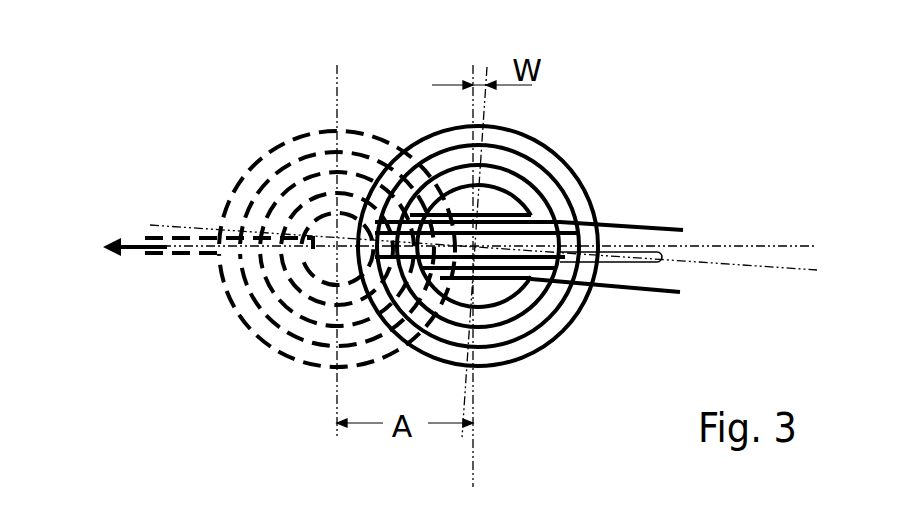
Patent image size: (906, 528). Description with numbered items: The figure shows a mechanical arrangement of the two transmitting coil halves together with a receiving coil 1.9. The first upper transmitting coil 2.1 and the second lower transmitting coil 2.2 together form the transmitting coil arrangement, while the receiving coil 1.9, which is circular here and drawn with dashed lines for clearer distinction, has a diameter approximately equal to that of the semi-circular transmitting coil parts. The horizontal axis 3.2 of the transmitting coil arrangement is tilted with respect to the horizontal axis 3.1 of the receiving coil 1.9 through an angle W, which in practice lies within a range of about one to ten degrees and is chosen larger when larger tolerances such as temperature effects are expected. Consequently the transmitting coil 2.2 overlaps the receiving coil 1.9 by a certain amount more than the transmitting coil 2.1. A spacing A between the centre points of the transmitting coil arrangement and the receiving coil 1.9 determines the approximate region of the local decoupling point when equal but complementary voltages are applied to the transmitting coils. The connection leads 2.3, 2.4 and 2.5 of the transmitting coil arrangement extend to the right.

The receiving coil 1.9 is at (263, 168).
The first upper transmitting coil 2.1 is at (504, 255).
The second lower transmitting coil 2.2 is at (523, 350).
The first lead of second coil 2.3 is at (676, 228).
The second lead of second coil 2.4 is at (672, 296).
The center tap lead of second coil 2.5 is at (683, 261).
The horizontal axis of the receiving coil 3.1 is at (208, 257).
The horizontal axis of the transmitting coil arrangement 3.2 is at (807, 272).